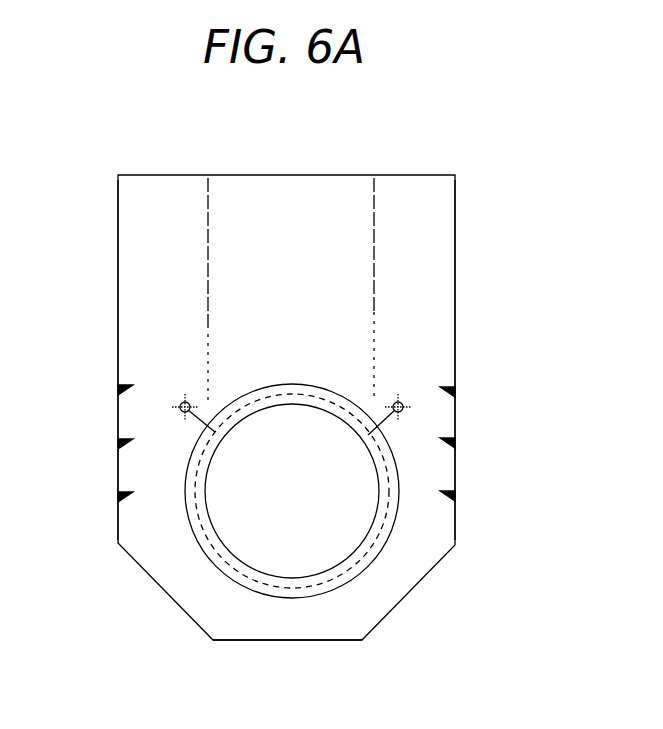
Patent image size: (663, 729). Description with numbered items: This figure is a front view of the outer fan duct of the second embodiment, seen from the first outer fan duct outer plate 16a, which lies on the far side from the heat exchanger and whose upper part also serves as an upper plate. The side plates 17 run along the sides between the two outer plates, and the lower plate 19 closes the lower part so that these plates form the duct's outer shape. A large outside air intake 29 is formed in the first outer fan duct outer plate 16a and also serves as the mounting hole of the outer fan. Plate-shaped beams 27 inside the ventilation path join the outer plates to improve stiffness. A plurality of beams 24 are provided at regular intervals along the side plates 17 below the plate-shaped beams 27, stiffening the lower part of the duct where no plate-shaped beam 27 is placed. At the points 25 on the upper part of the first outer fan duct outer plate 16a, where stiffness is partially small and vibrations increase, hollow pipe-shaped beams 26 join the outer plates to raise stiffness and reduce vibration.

The first outer fan duct outer plate 16a is at (440, 252).
The side plate 17 is at (455, 317).
The lower plate 19 is at (292, 641).
The beam 24 is at (118, 400).
The points 25 is at (188, 403).
The pipe-shaped beam 26 is at (367, 436).
The plate-shaped beam 27 is at (208, 323).
The outside air intake 29 is at (293, 497).